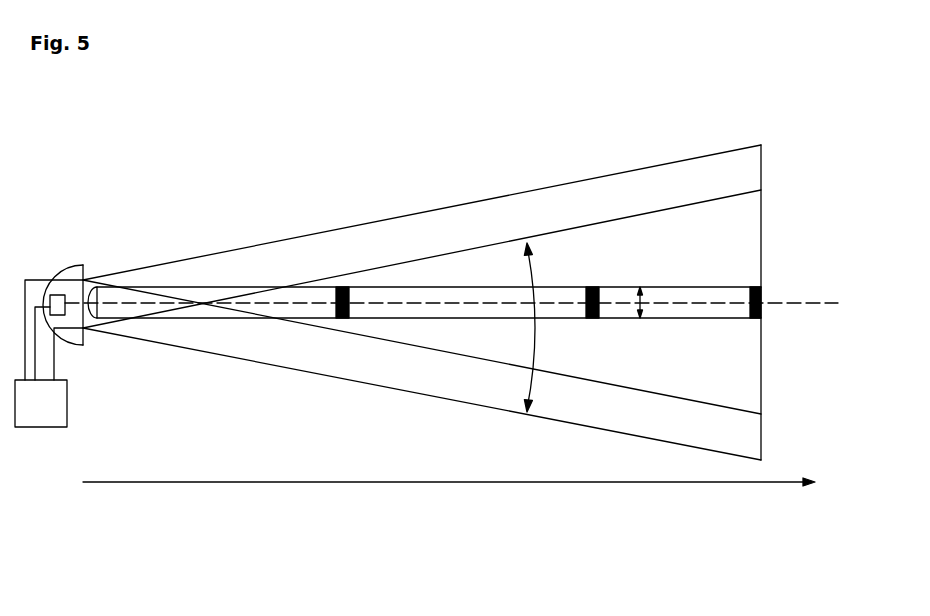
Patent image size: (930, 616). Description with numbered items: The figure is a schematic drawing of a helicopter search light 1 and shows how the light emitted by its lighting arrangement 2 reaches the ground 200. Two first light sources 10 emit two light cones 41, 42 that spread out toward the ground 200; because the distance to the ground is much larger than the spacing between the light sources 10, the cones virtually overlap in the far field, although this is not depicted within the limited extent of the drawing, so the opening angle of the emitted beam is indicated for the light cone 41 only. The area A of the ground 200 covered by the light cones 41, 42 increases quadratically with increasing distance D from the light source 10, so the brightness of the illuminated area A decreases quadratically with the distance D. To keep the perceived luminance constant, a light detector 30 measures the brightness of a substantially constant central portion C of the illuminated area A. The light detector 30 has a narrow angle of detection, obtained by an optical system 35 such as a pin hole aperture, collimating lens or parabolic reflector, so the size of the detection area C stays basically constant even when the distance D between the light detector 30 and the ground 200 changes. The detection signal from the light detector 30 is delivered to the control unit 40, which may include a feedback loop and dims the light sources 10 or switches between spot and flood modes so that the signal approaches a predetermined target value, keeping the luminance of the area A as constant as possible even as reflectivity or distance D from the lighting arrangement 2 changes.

The helicopter search light 1 is at (362, 150).
The lighting arrangement 2 is at (78, 248).
The first light sources 10 is at (88, 266).
The light detector 30 is at (49, 299).
The optical system 35 is at (63, 283).
The control unit 40 is at (38, 412).
The light cone 41 is at (195, 376).
The light cone 42 is at (195, 235).
The ground 200 is at (762, 378).
The illuminated area A is at (776, 206).
The central portion (detection area) C is at (776, 291).
The distance D is at (441, 487).